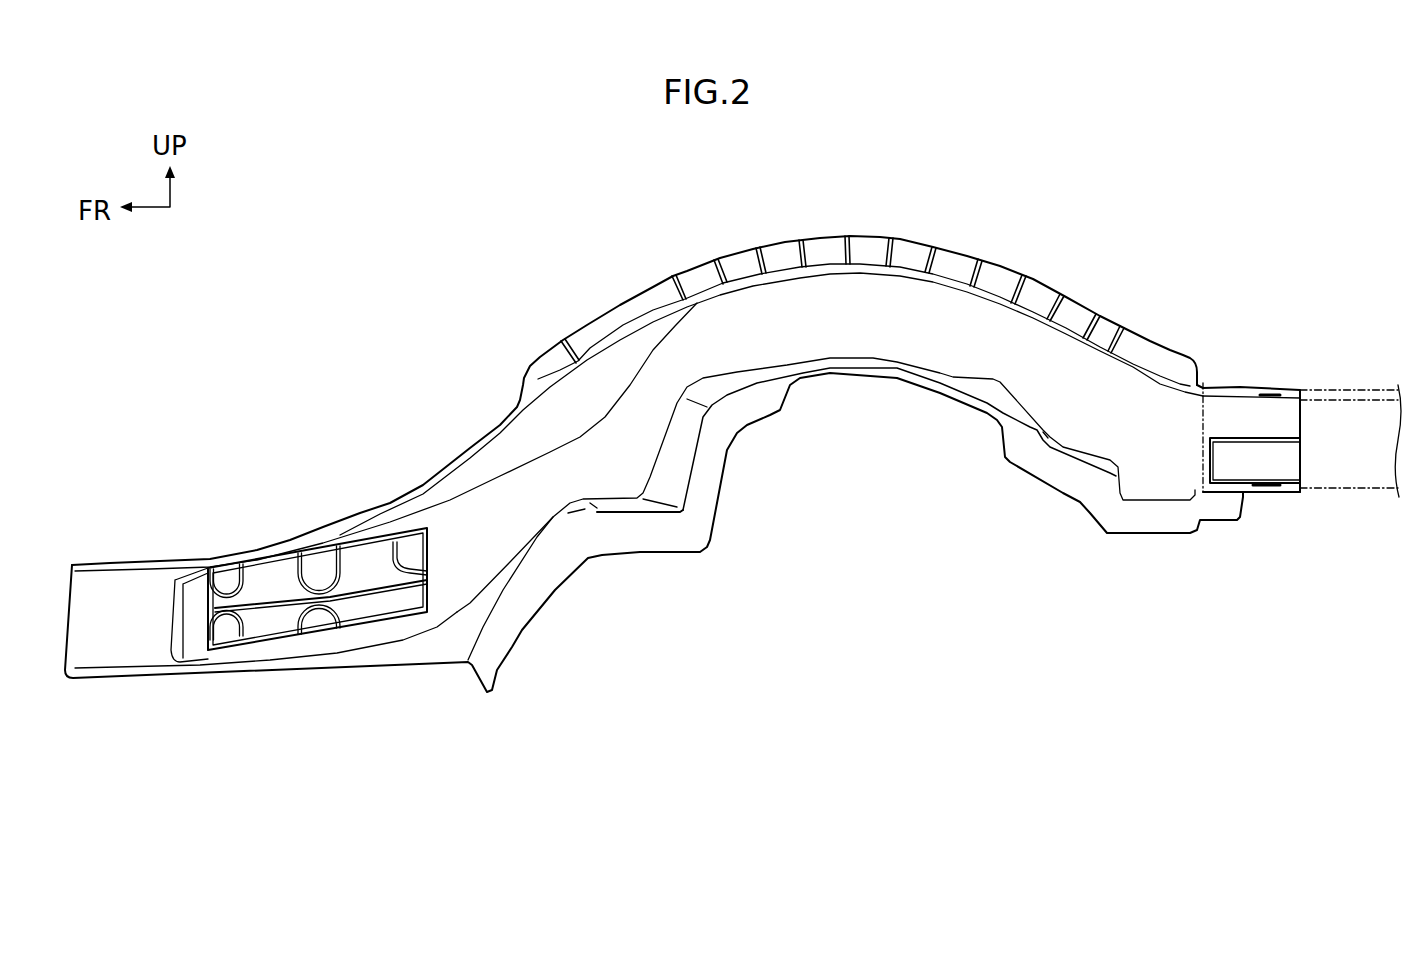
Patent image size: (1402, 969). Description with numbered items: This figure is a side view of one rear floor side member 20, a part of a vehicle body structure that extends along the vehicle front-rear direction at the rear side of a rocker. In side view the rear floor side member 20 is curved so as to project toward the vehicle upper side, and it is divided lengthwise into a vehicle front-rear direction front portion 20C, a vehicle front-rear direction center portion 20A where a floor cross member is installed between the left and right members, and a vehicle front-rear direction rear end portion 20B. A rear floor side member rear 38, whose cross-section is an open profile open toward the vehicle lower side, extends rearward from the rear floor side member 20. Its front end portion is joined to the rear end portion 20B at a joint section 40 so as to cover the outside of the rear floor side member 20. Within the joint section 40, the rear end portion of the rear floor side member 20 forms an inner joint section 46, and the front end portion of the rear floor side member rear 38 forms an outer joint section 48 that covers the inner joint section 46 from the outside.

The rear floor side member 20 is at (654, 441).
The vehicle front-rear direction center portion 20A is at (862, 295).
The vehicle front-rear direction rear end portion 20B is at (1162, 427).
The vehicle front-rear direction front portion 20C is at (423, 523).
The rear floor side member rear 38 is at (1368, 380).
The joint section 40 is at (1268, 449).
The inner joint section 46 is at (1273, 497).
The outer joint section 48 is at (1293, 473).